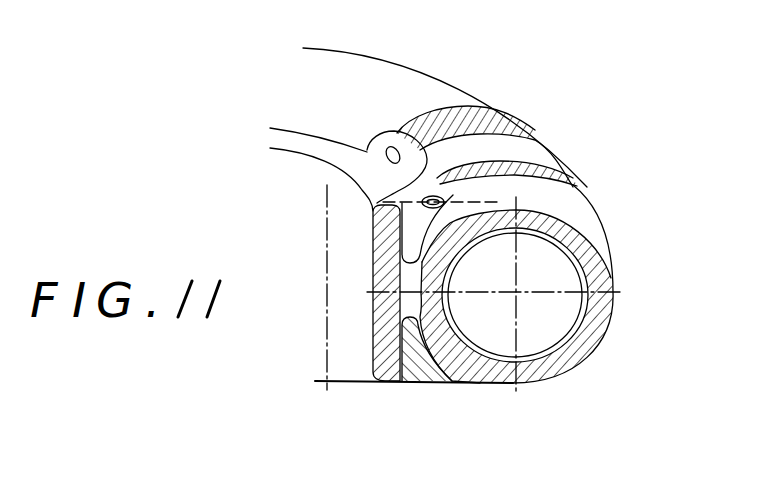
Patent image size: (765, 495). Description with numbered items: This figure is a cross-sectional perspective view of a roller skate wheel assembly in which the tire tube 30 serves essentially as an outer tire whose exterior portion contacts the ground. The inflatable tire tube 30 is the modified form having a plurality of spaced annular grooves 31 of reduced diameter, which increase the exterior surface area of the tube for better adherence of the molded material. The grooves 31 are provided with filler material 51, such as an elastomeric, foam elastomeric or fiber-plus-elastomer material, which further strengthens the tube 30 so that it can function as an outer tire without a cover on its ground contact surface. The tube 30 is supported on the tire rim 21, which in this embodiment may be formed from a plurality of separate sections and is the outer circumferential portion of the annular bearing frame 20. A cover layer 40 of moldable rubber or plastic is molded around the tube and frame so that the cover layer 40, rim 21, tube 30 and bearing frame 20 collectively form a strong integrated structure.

The bearing frame 20 is at (377, 244).
The tire rim 21 is at (446, 195).
The filler material 51 is at (484, 116).
The tire tube 30 is at (573, 185).
The annular grooves 31 is at (490, 255).
The cover layer 40 is at (428, 386).